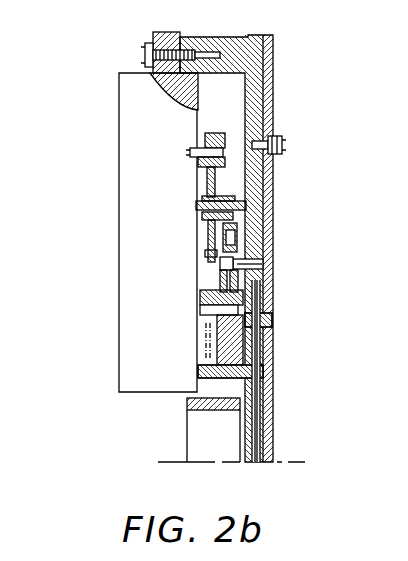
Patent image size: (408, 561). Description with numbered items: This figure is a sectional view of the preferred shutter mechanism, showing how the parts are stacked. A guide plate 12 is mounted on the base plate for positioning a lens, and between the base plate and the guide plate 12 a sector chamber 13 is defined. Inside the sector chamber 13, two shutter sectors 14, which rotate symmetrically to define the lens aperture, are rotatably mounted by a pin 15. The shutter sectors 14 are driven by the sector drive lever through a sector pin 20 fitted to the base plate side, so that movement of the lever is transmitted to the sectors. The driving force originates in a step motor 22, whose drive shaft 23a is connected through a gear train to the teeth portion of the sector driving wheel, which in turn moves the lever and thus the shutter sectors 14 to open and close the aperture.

The guide plate 12 is at (188, 402).
The sector chamber 13 is at (262, 418).
The shutter sectors 14 is at (256, 452).
The pin 15 is at (260, 323).
The sector pin 20 is at (258, 368).
The step motor 22 is at (125, 363).
The drive shaft 23a is at (230, 152).